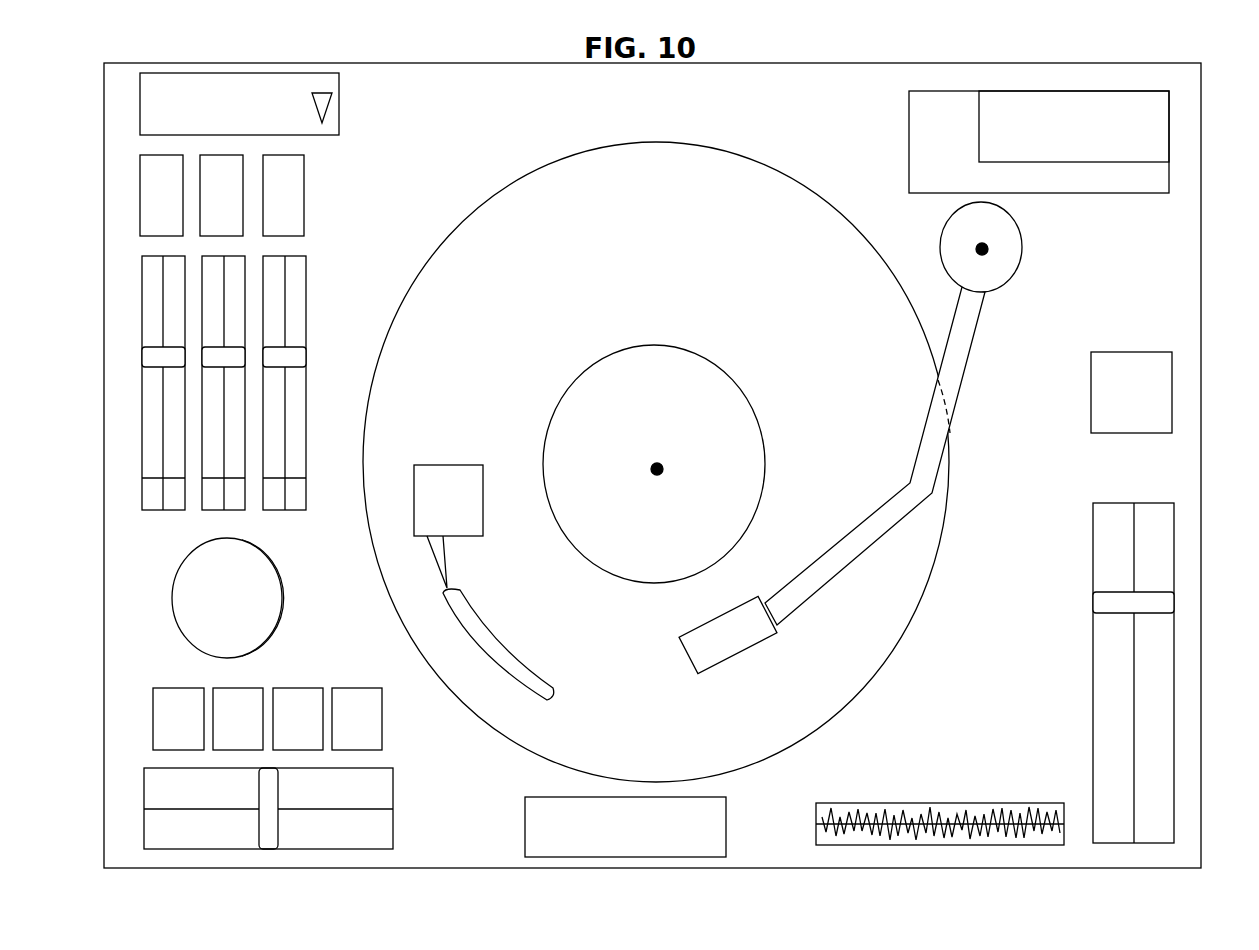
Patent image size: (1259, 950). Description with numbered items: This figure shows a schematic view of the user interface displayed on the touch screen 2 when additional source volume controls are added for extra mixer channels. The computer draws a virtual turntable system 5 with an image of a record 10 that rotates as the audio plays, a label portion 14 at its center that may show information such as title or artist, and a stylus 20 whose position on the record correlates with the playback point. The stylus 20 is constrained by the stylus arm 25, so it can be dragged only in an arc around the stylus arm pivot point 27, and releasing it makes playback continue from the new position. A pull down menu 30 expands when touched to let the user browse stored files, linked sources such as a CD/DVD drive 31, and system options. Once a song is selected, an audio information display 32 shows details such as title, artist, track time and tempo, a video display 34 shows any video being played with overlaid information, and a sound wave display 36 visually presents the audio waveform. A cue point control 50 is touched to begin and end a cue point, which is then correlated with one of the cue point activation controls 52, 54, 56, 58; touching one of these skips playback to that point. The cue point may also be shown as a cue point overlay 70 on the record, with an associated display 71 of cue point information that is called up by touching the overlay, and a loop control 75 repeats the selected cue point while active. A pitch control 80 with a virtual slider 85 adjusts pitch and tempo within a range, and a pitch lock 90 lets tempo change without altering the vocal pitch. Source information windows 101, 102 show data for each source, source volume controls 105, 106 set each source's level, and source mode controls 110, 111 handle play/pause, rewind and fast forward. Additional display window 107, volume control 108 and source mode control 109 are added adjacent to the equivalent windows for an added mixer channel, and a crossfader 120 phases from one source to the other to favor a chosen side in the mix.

The screen 2 is at (1201, 135).
The virtual turntable system 5 is at (440, 112).
The record 10 is at (782, 172).
The label portion 14 is at (591, 439).
The stylus 20 is at (712, 650).
The stylus arm 25 is at (857, 555).
The stylus arm pivot point 27 is at (987, 243).
The pull down menu 30 is at (230, 120).
The CD/DVD drive 31 is at (615, 845).
The audio information display 32 is at (1127, 132).
The video display 34 is at (1127, 192).
The sound wave display 36 is at (905, 803).
The cue point control 50 is at (203, 642).
The cue point activation control 52 is at (165, 742).
The cue point activation control 54 is at (225, 742).
The cue point activation control 56 is at (285, 742).
The cue point activation control 58 is at (344, 742).
The cue point overlay 70 is at (472, 605).
The associated display 71 is at (430, 522).
The loop control 75 is at (293, 610).
The pitch control 80 is at (1113, 548).
The virtual slider 85 is at (1112, 603).
The pitch lock 90 is at (1139, 405).
The source information window 101 is at (181, 218).
The source information window 102 is at (241, 218).
The source volume control 105 is at (244, 310).
The source volume control 106 is at (183, 310).
The display window 107 is at (303, 218).
The volume control 108 is at (305, 310).
The source mode control 109 is at (305, 500).
The source mode control 110 is at (183, 500).
The source mode control 111 is at (244, 500).
The crossfader 120 is at (373, 788).